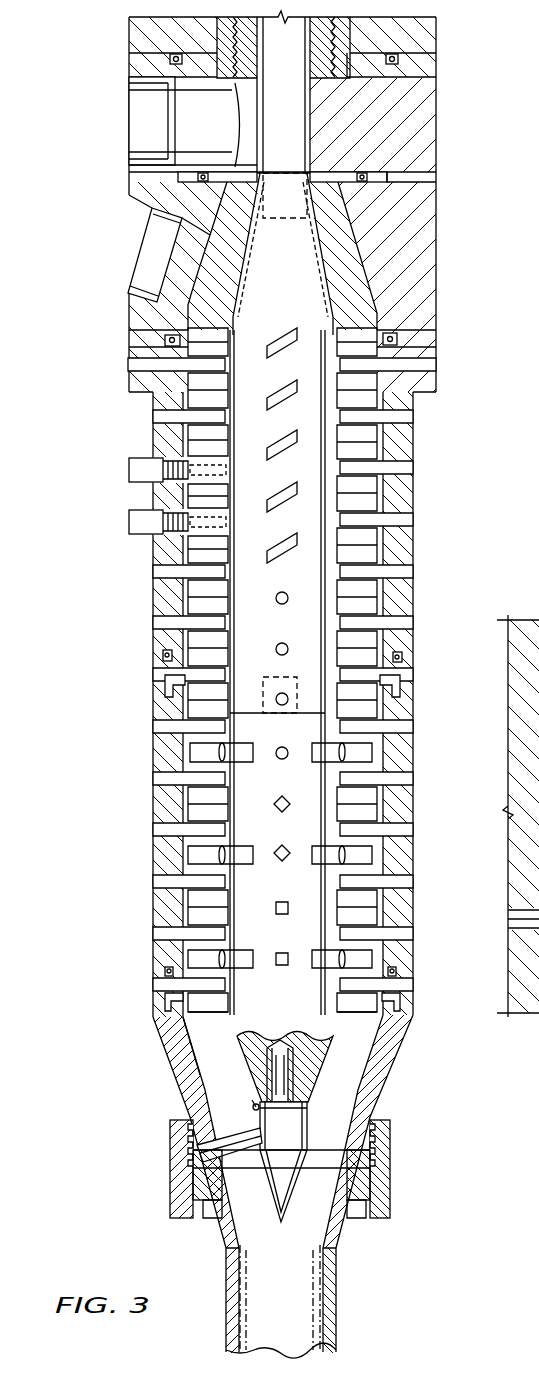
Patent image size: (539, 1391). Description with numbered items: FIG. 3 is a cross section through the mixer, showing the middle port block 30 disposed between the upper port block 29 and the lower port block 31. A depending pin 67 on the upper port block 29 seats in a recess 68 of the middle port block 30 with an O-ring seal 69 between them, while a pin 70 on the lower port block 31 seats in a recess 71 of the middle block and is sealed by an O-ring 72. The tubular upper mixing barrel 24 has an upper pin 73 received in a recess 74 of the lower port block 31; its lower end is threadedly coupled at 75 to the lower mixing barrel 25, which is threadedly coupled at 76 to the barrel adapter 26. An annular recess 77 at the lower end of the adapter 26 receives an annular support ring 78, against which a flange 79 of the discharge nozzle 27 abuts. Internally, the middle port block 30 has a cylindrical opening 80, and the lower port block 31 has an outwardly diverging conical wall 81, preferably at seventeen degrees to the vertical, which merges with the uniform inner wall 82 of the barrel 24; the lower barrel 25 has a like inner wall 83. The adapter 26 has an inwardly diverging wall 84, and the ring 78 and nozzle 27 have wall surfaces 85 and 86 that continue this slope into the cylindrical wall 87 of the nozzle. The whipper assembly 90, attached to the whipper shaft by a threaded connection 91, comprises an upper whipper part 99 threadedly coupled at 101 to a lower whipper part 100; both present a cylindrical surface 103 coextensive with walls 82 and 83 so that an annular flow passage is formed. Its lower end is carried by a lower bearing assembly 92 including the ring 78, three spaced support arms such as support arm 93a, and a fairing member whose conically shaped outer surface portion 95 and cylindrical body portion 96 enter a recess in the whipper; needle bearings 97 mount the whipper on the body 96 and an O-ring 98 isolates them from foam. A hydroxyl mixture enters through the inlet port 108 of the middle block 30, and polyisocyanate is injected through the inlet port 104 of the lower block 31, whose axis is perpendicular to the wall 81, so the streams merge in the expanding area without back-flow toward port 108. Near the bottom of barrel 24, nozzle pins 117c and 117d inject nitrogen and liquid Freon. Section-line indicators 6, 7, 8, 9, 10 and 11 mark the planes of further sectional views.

The section line 6- 6 is at (100, 524).
The section line 7- 7 is at (128, 413).
The section line 8- 8 is at (128, 775).
The section line 9- 9 is at (128, 870).
The section line 10- 10 is at (128, 928).
The section line 11- 11 is at (152, 1165).
The upper mixing barrel 24 is at (413, 547).
The lower mixing barrel 25 is at (413, 747).
The barrel adapter 26 is at (397, 1064).
The discharge nozzle 27 is at (337, 1290).
The upper port block 29 is at (427, 47).
The middle port block 30 is at (438, 110).
The lower port block 31 is at (437, 240).
The cylindrically shaped pin 67 is at (398, 72).
The cylindrically shaped recess 68 is at (232, 45).
The O-ring seal 69 is at (436, 32).
The cylindrically shaped pin 70 is at (388, 182).
The cylindrical recess 71 is at (196, 181).
The O-ring 72 is at (368, 178).
The upper cylindrically shaped pin 73 is at (398, 340).
The cylindrical recess 74 is at (172, 335).
The threaded coupling 75 is at (400, 660).
The threaded coupling 76 is at (403, 990).
The annular recess 77 is at (367, 1143).
The annular support ring 78 is at (373, 1163).
The flange 79 is at (357, 1190).
The cylindrical opening 80 is at (340, 152).
The conically shaped wall 81 is at (360, 270).
The inner cylindrical wall 82 is at (368, 455).
The inner cylindrical wall 83 is at (372, 817).
The inner wall surface 84 is at (375, 1038).
The inner wall surface 85 is at (362, 1145).
The inner wall surface 86 is at (330, 1227).
The cylindrically shaped wall surface 87 is at (322, 1313).
The whipper assembly 90 is at (322, 634).
The threaded connection 91 is at (335, 212).
The lower bearing assembly 92 is at (257, 1077).
The support arm 93a is at (222, 1205).
The conical tip 95 is at (270, 1212).
The cylindrically shaped body portion 96 is at (307, 1150).
The needle bearings 97 is at (283, 1068).
The O-ring 98 is at (256, 1110).
The upper whipper part 99 is at (232, 268).
The lower whipper part 100 is at (215, 1020).
The threaded coupling 101 is at (263, 677).
The cylindrical surface 103 is at (340, 612).
The inlet port 104 is at (165, 240).
The inlet port 108 is at (170, 95).
The nozzle pin 117c is at (128, 468).
The nozzle pin 117d is at (128, 520).